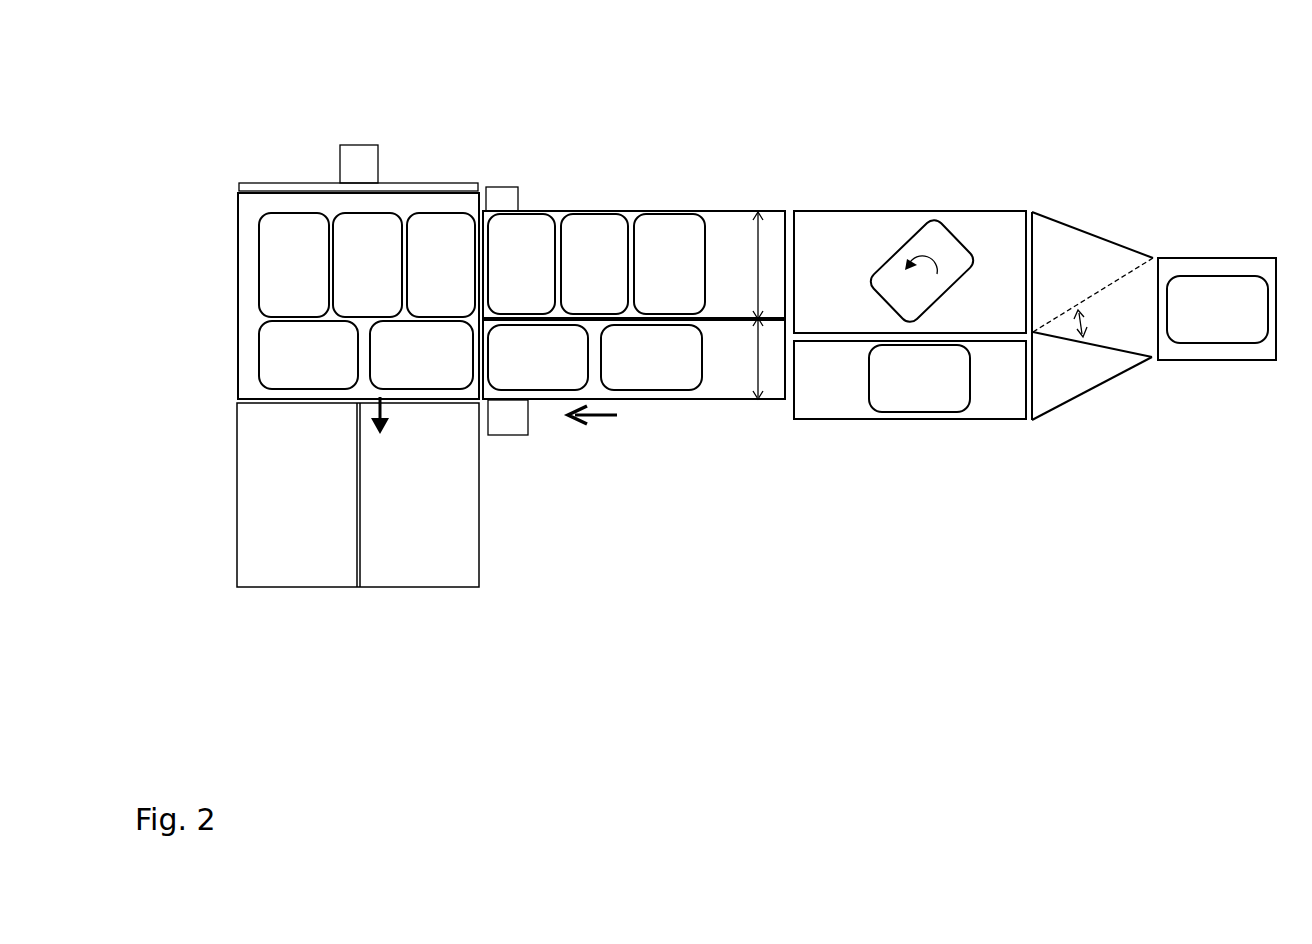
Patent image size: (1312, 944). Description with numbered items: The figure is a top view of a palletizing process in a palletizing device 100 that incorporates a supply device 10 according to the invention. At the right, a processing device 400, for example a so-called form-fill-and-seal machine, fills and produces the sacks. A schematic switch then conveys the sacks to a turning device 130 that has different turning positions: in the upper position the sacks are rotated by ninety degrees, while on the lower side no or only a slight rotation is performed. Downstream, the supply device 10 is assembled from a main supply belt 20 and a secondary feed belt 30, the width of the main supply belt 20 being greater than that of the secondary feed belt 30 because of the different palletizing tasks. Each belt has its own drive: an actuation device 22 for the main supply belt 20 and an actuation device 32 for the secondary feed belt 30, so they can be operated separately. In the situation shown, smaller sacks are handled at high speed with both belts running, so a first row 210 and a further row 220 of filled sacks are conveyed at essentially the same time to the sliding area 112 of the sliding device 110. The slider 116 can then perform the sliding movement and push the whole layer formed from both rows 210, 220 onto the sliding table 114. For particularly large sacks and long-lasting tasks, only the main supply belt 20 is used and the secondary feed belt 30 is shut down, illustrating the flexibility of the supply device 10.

The palletizing device 100 is at (166, 197).
The sliding device 110 is at (319, 160).
The slider 116 is at (388, 184).
The sliding area 112 is at (242, 338).
The sliding table 114 is at (247, 500).
The first row 210 is at (250, 261).
The further row 220 is at (250, 362).
The supply device 10 is at (662, 154).
The main supply belt 20 is at (737, 211).
The secondary feed belt 30 is at (735, 399).
The actuation device 22 is at (500, 187).
The actuation device 32 is at (512, 435).
The turning device 130 is at (886, 196).
The processing device 400 is at (1193, 240).